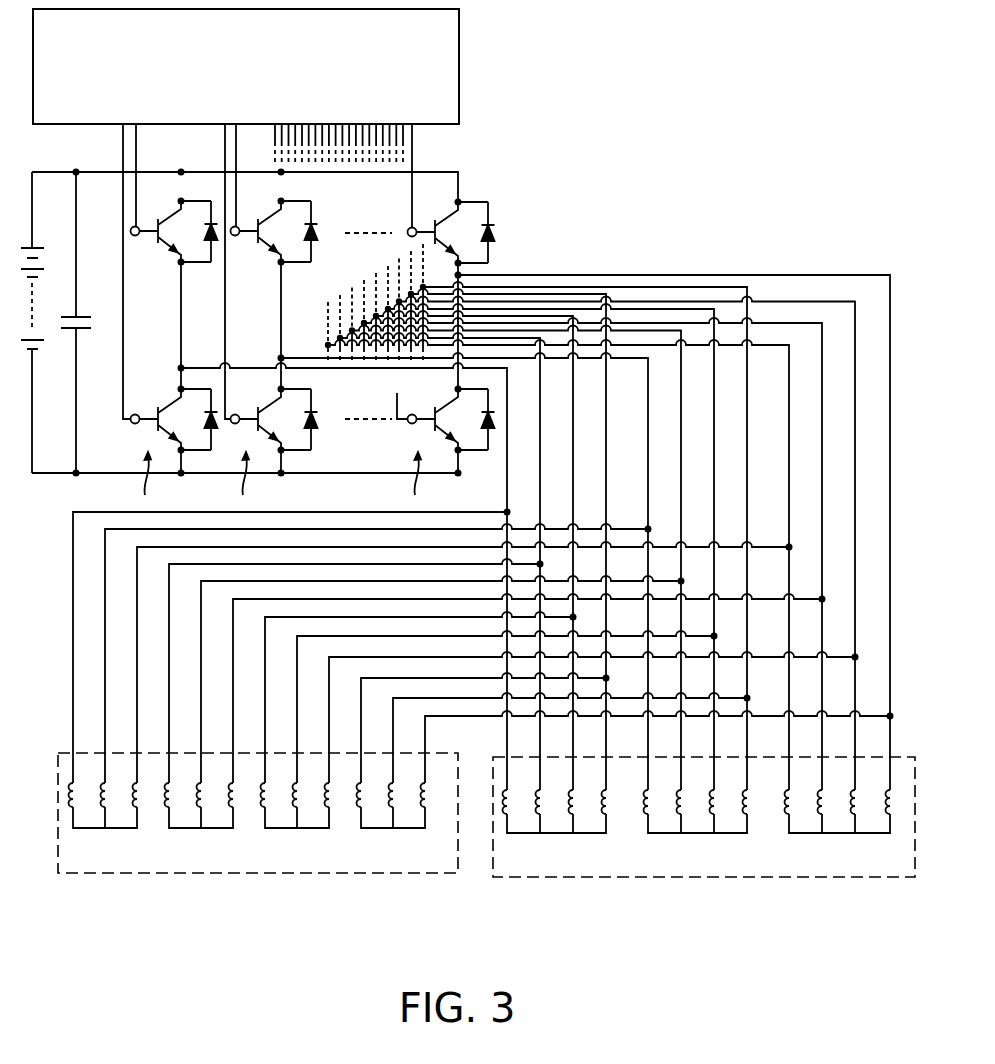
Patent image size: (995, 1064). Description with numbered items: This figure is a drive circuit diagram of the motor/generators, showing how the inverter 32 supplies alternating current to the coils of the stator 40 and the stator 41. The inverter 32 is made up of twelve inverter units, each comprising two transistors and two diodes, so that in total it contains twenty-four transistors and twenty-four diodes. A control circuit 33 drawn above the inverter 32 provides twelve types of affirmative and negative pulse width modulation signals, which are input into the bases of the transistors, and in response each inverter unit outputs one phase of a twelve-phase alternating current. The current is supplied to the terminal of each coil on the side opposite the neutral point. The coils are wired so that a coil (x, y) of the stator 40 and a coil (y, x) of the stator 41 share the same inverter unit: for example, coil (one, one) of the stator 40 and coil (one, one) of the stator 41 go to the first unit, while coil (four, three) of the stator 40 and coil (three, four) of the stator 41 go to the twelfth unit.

The inverter 32 is at (484, 174).
The control circuit 33 is at (459, 26).
The stator 40 is at (128, 873).
The stator 41 is at (563, 877).